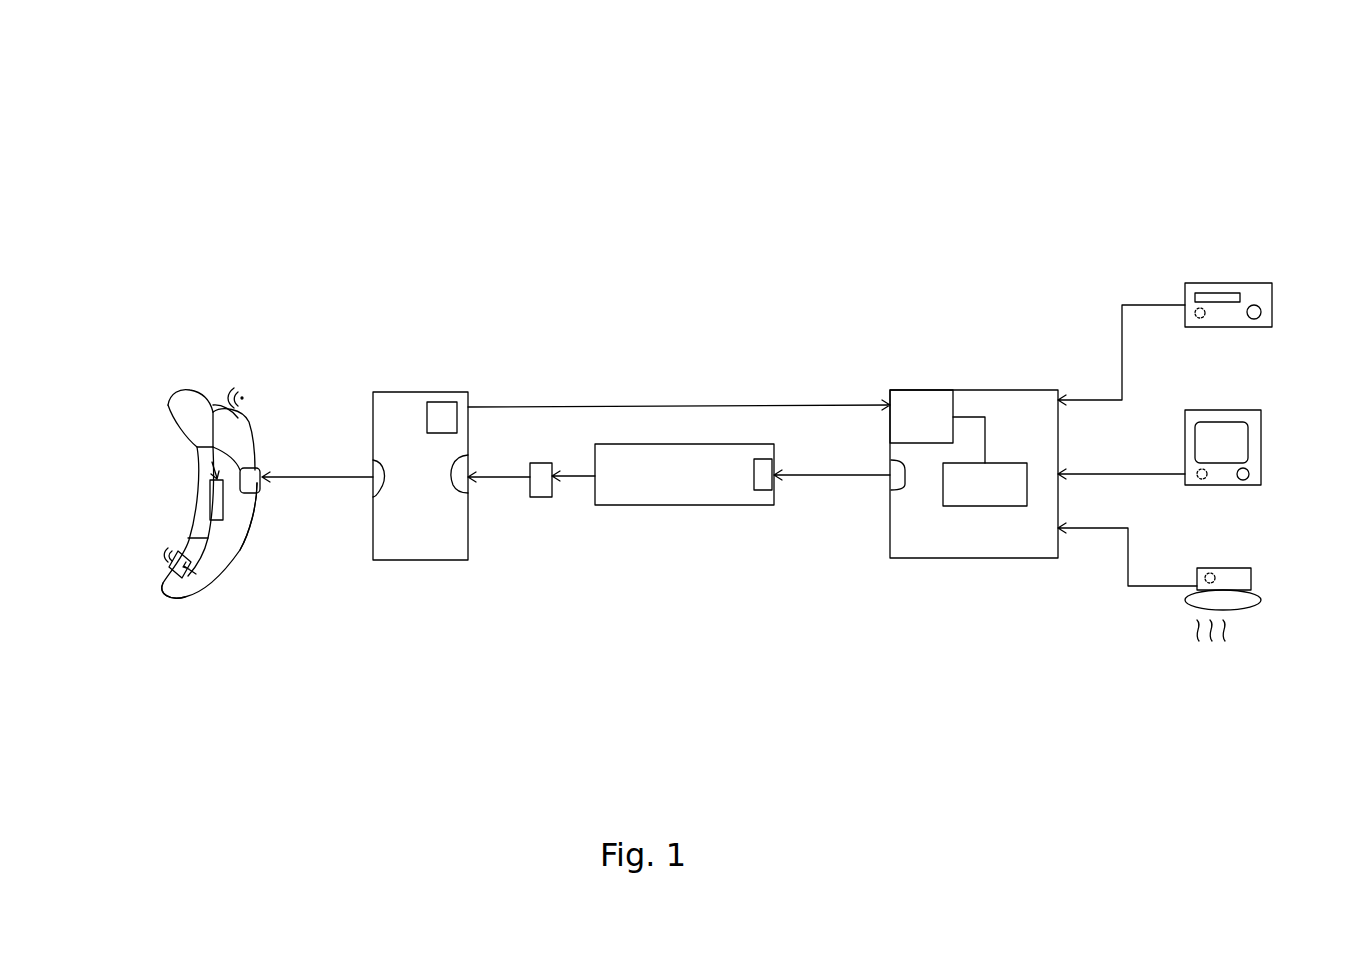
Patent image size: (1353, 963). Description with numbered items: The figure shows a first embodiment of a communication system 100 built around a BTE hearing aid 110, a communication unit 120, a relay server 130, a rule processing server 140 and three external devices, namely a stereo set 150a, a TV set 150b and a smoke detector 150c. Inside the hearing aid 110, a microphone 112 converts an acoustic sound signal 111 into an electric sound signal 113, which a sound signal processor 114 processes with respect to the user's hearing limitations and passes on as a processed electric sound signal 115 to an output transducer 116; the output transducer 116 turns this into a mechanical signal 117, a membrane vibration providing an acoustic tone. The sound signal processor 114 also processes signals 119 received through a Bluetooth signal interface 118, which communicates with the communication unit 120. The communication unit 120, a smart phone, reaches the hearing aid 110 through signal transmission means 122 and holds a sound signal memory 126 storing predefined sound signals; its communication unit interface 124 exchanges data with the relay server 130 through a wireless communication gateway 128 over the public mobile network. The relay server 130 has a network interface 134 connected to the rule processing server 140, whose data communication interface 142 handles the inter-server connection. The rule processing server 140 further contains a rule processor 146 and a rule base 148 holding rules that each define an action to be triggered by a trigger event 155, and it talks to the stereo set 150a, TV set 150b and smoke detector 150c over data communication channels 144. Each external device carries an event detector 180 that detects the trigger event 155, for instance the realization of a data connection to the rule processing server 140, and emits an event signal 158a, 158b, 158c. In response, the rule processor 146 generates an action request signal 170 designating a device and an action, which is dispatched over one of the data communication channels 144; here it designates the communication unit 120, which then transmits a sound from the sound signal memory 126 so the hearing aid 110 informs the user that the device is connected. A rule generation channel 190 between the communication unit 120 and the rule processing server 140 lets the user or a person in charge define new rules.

The communication system 100 is at (388, 136).
The hearing aid 110 is at (176, 398).
The acoustic sound signal 111 is at (237, 383).
The microphone 112 is at (217, 390).
The electric sound signal 113 is at (197, 447).
The sound signal processor 114 is at (210, 497).
The processed electric sound signal 115 is at (190, 538).
The output transducer 116 is at (170, 583).
The mechanical signal 117 is at (157, 563).
The signal interface 118 is at (253, 507).
The signals 119 is at (253, 463).
The communication unit 120 is at (388, 408).
The signal transmission means 122 is at (386, 505).
The communication unit interface 124 is at (458, 490).
The sound signal memory 126 is at (440, 417).
The wireless communication gateway 128 is at (542, 463).
The relay server 130 is at (668, 460).
The network interface 134 is at (763, 473).
The rule processing server 140 is at (1013, 405).
The data communication interface 142 is at (900, 490).
The data communication channels 144 is at (1097, 559).
The rule processor 146 is at (985, 493).
The rule base 148 is at (908, 403).
The stereo set 150a is at (1255, 290).
The TV set 150b is at (1255, 428).
The smoke detector 150c is at (1245, 580).
The trigger event 155 is at (1266, 623).
The event signal 158a is at (1133, 305).
The event signal 158b is at (1142, 473).
The event signal 158c is at (1130, 560).
The action request signal 170 is at (820, 478).
The event detector 180 is at (1200, 320).
The rule generation channel 190 is at (820, 405).